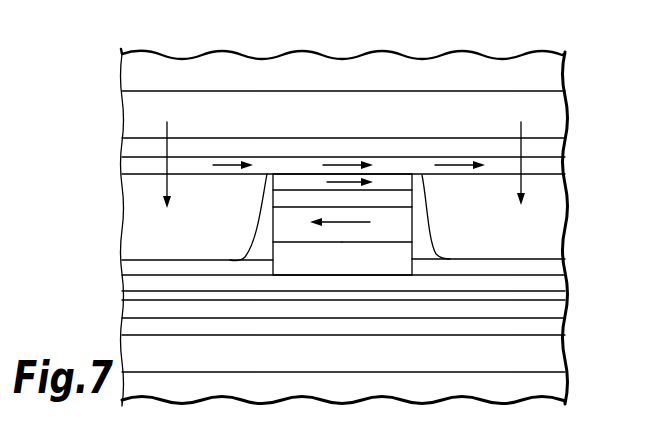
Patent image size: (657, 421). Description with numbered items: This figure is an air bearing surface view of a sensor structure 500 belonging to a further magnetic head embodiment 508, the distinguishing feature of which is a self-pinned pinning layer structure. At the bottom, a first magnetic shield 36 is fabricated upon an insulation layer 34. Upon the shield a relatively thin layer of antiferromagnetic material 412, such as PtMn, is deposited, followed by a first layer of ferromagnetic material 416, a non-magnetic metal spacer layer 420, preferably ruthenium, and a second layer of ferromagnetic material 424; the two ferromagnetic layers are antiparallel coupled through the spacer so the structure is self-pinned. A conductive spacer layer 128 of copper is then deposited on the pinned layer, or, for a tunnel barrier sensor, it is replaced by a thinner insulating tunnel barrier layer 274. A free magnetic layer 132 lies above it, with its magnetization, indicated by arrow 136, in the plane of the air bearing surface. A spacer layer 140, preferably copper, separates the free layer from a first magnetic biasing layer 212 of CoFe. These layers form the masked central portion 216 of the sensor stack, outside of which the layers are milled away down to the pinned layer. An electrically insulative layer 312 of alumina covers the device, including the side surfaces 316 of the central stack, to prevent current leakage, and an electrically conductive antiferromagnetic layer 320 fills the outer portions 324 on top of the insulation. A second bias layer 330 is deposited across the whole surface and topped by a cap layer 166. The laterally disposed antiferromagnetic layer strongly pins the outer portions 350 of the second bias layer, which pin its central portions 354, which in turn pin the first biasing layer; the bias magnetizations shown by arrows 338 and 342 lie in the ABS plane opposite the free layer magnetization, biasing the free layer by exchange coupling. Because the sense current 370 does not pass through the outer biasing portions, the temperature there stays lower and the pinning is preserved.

The sensor structure 500 is at (168, 43).
The magnetic head embodiment 508 is at (273, 41).
The central portion of the sensor layers 216 is at (344, 121).
The outer portions of the second bias layer 350 is at (128, 166).
The second bias layer 330 is at (546, 164).
The outer portions of the sensor 324 is at (341, 151).
The magnetization of the first bias layer 338 is at (330, 182).
The magnetization of the second bias layer 342 is at (335, 163).
The central portions of the second bias layer 354 is at (380, 163).
The cap layer 166 is at (418, 148).
The first magnetic biasing layer 212 is at (395, 182).
The spacer layer 140 is at (287, 199).
The side surfaces of the central sensor stack 316 is at (265, 221).
The tunnel barrier layer 274 is at (240, 260).
The spacer layer 128 is at (413, 260).
The magnetization of the free magnetic layer 136 is at (343, 226).
The free magnetic layer 132 is at (365, 229).
The sense current 370 is at (342, 258).
The antiferromagnetic layer 320 is at (136, 218).
The electrically insulative layer 312 is at (134, 268).
The second layer of ferromagnetic material 424 is at (553, 281).
The non-magnetic metal spacer layer 420 is at (557, 297).
The first layer of ferromagnetic material 416 is at (134, 308).
The layer of antiferromagnetic material 412 is at (555, 322).
The first magnetic shield 36 is at (555, 352).
The insulation layer 34 is at (555, 385).